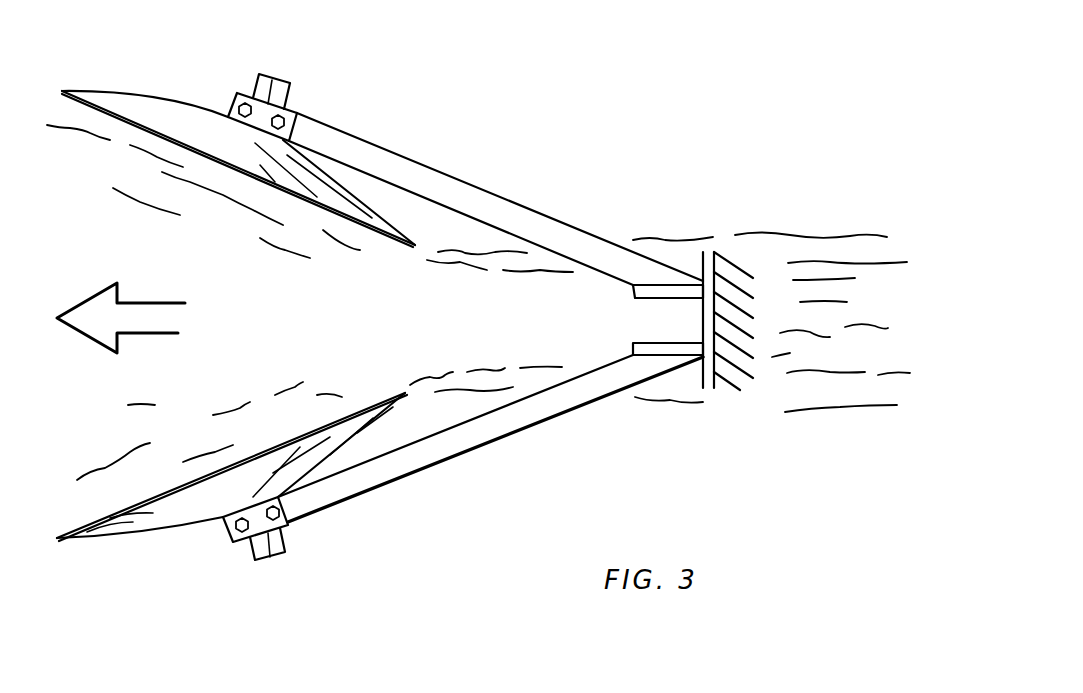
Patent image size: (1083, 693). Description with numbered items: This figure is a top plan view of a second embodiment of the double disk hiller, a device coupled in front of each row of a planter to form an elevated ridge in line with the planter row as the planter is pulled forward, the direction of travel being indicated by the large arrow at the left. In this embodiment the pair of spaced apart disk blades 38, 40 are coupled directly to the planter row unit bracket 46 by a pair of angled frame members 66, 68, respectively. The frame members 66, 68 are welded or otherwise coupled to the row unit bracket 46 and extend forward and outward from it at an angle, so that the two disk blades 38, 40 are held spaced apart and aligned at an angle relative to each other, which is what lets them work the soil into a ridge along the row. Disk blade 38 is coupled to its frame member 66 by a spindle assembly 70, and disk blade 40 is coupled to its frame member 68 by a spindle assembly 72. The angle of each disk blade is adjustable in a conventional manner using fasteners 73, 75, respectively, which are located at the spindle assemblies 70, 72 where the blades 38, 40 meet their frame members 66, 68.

The disk blade 38 is at (160, 518).
The disk blade 40 is at (162, 113).
The planter row unit bracket 46 is at (660, 288).
The angled frame member 66 is at (455, 450).
The angled frame member 68 is at (470, 195).
The spindle assembly 70 is at (240, 557).
The spindle assembly 72 is at (272, 88).
The fastener 73 is at (283, 513).
The fastener 75 is at (240, 107).